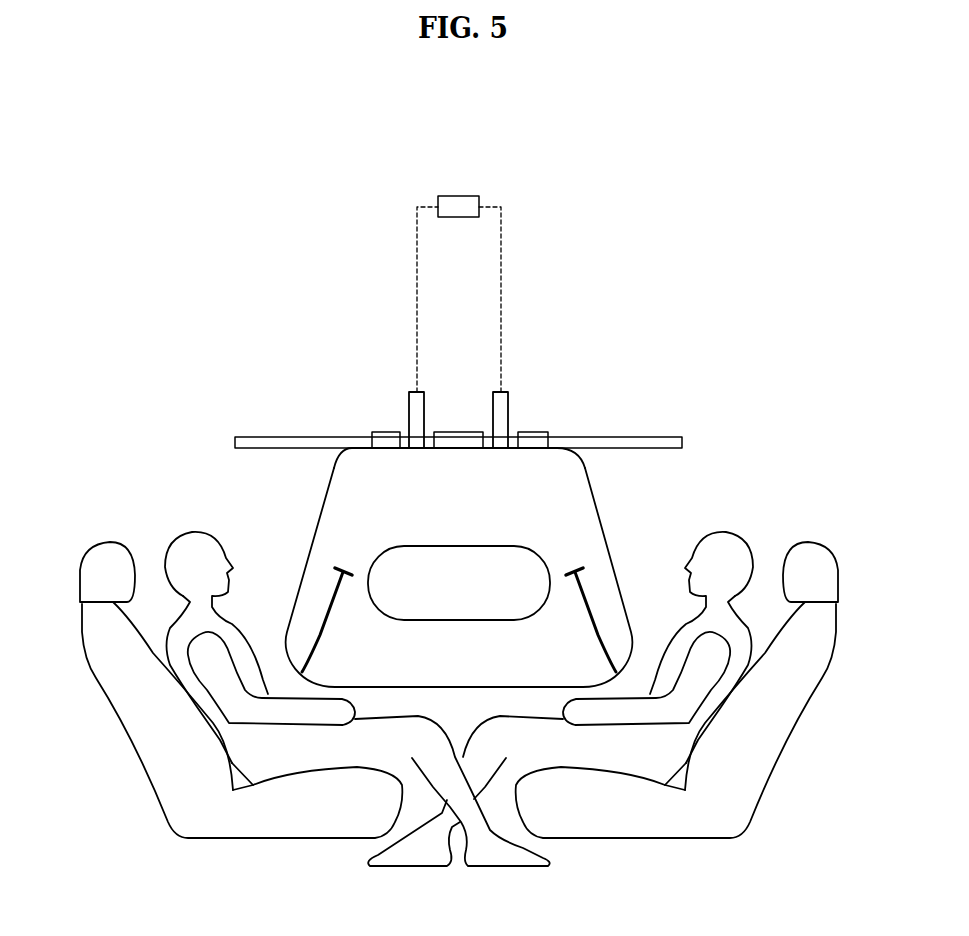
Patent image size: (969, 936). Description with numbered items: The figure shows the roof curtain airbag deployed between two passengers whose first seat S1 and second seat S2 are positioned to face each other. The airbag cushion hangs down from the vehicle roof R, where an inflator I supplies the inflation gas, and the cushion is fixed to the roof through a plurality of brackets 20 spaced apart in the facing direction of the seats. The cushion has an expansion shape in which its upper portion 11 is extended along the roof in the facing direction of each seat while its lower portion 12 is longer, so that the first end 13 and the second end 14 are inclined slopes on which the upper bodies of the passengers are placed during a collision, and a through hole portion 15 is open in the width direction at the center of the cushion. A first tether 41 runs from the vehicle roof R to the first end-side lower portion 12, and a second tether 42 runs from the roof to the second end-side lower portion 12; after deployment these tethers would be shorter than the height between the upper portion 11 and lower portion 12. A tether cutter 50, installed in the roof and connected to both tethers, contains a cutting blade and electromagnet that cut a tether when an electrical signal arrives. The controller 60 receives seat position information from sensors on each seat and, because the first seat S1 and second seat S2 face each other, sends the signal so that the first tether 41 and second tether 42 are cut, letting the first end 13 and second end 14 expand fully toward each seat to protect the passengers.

The controller 60 is at (473, 197).
The tether cutter 50 is at (412, 392).
The vehicle roof R is at (248, 438).
The upper portion 11 is at (397, 475).
The inflator I is at (455, 432).
The bracket 20 is at (535, 435).
The first end 13 is at (307, 550).
The second end 14 is at (605, 530).
The lower portion 12 is at (428, 652).
The through hole portion 15 is at (477, 615).
The first tether 41 is at (323, 626).
The second tether 42 is at (595, 626).
The first seat S1 is at (167, 782).
The second seat S2 is at (751, 782).